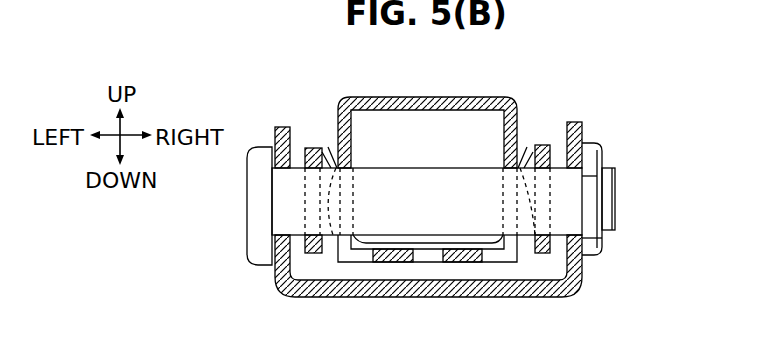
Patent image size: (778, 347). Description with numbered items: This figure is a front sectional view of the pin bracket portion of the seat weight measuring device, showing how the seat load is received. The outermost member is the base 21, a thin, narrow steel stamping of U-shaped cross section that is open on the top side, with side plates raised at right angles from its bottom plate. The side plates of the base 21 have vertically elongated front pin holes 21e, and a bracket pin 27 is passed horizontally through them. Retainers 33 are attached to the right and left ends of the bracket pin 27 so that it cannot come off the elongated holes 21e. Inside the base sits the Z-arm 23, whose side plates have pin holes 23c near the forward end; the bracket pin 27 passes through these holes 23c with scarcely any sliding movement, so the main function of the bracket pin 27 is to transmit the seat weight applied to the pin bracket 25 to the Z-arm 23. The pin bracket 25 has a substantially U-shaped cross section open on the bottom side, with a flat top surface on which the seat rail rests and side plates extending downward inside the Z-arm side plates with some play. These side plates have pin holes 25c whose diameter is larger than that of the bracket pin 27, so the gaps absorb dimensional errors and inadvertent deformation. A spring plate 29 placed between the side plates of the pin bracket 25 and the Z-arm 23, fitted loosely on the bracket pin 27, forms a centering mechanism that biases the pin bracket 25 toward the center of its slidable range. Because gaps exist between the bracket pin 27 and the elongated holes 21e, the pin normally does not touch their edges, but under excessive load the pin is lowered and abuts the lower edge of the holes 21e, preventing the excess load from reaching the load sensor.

The base 21 is at (583, 265).
The front pin holes 21e is at (578, 172).
The Z-arm 23 is at (537, 145).
The pin holes 23c is at (590, 184).
The pin bracket 25 is at (467, 97).
The pin holes 25c is at (503, 176).
The bracket pin 27 is at (608, 185).
The spring plate 29 is at (527, 147).
The retainers 33 is at (606, 233).